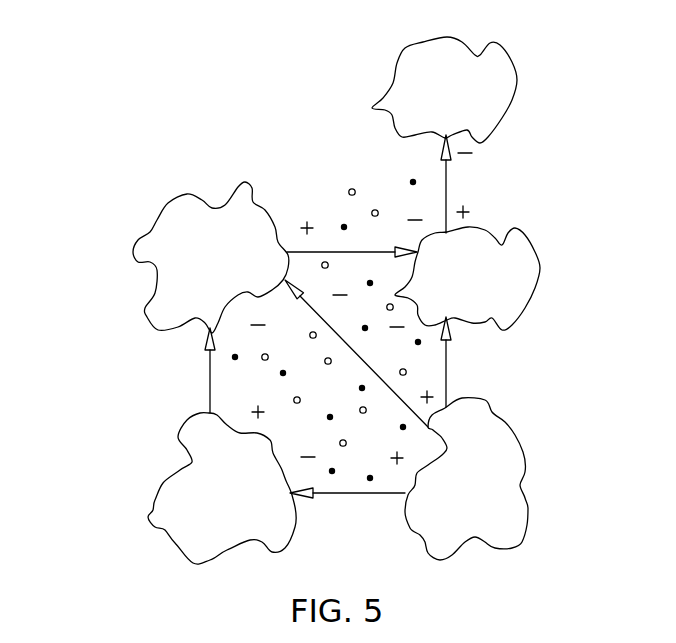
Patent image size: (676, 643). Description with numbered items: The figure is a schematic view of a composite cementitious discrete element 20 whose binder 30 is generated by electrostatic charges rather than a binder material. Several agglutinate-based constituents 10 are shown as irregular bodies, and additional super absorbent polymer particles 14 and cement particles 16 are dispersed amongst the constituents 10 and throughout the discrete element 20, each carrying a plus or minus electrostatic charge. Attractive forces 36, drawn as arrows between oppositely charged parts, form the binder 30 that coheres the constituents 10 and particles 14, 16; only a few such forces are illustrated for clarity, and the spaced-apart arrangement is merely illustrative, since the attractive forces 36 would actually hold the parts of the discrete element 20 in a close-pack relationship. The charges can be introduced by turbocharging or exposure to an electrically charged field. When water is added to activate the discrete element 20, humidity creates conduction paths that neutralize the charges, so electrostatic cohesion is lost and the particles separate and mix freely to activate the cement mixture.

The agglutinate-based constituent 10 is at (152, 237).
The super absorbent polymer particles 14 is at (344, 227).
The cement particles 16 is at (352, 190).
The composite cementitious discrete element 20 is at (101, 103).
The binder 30 is at (172, 357).
The attractive forces 36 is at (447, 183).